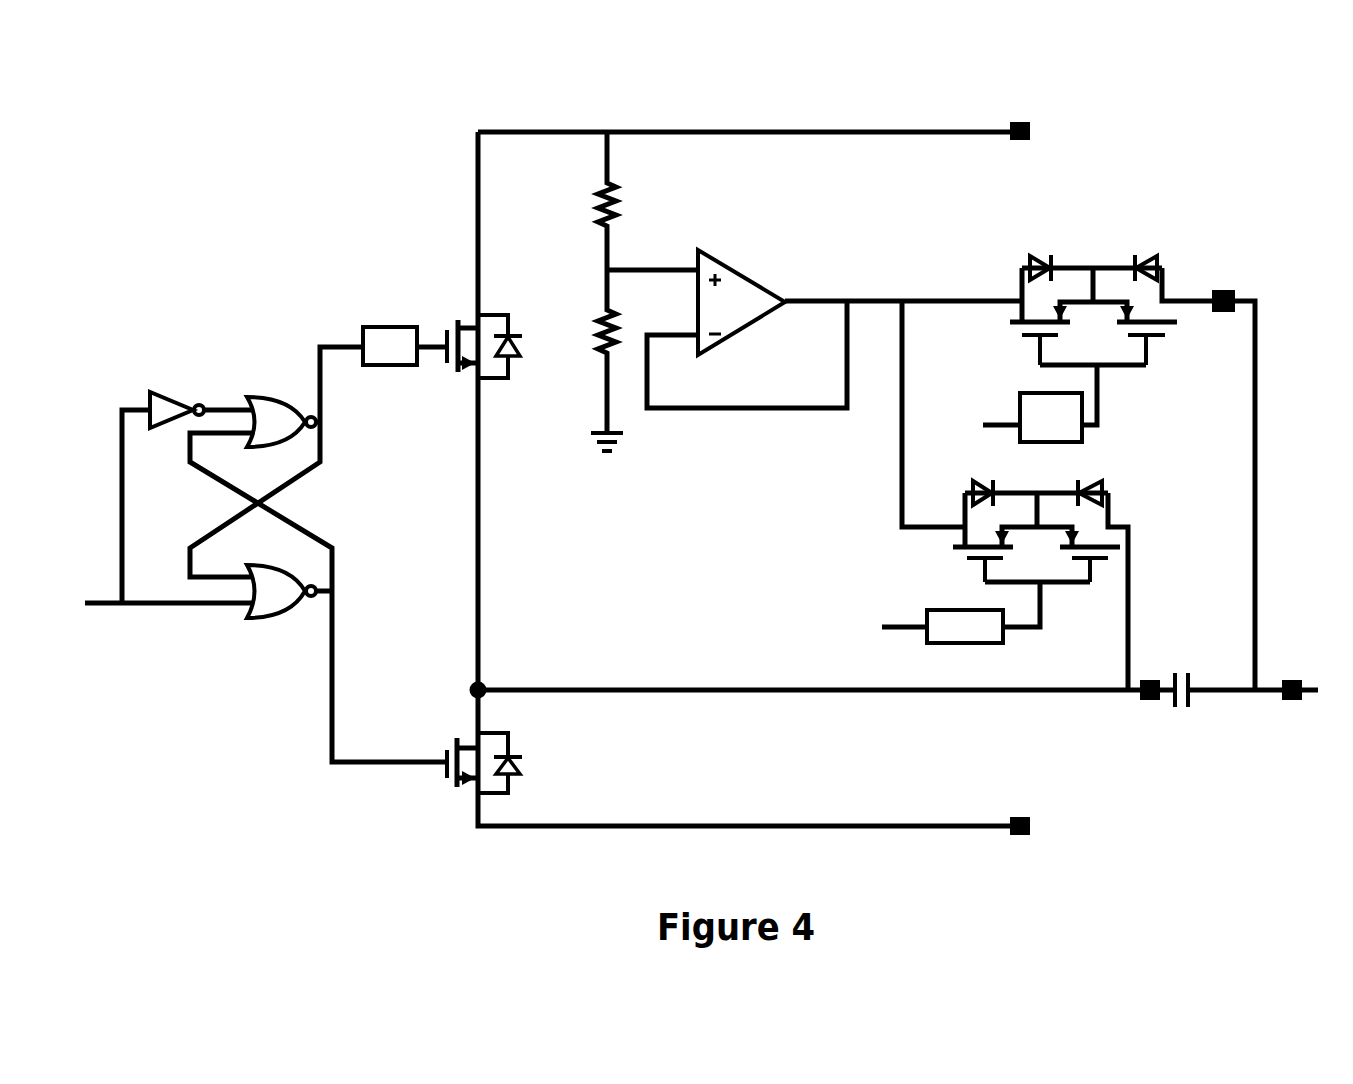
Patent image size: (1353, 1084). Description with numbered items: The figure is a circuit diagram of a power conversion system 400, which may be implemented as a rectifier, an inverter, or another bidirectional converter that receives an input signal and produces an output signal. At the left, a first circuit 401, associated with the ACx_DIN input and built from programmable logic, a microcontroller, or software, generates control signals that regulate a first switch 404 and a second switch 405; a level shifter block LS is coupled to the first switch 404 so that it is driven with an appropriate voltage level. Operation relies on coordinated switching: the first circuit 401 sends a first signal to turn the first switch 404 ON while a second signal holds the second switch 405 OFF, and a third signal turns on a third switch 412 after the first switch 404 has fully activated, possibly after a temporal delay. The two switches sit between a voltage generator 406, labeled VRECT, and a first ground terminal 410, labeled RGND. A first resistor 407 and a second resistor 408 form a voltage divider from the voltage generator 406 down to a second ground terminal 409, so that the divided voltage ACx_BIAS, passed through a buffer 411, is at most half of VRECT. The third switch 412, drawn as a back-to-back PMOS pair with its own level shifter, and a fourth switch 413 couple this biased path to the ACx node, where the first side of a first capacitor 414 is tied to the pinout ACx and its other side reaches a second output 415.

The system 400 is at (270, 85).
The first circuit 401 is at (232, 408).
The first switch 404 is at (473, 327).
The second switch 405 is at (473, 745).
The voltage generator 406 is at (1020, 120).
The first resistor 407 is at (612, 195).
The second resistor 408 is at (590, 325).
The second ground terminal 409 is at (590, 433).
The first ground terminal 410 is at (1007, 835).
The buffer 411 is at (710, 253).
The third switch 412 is at (1078, 265).
The fourth switch 413 is at (970, 505).
The first capacitor 414 is at (1177, 707).
The second output 415 is at (1282, 695).